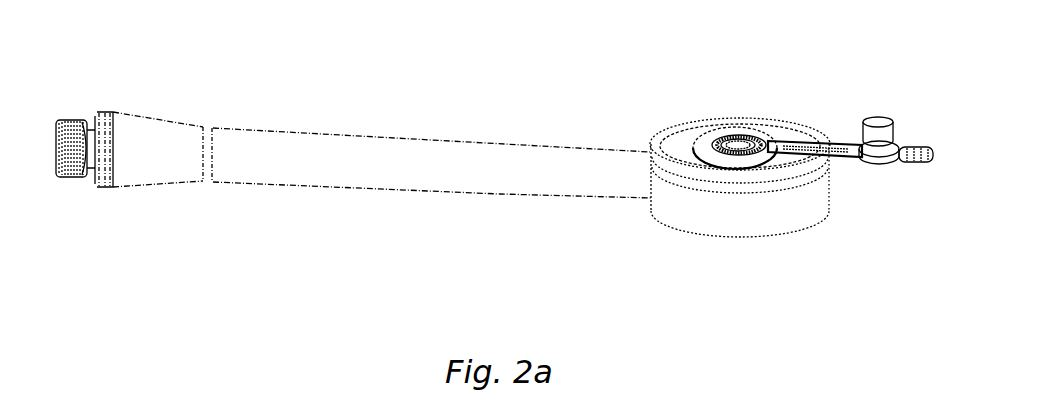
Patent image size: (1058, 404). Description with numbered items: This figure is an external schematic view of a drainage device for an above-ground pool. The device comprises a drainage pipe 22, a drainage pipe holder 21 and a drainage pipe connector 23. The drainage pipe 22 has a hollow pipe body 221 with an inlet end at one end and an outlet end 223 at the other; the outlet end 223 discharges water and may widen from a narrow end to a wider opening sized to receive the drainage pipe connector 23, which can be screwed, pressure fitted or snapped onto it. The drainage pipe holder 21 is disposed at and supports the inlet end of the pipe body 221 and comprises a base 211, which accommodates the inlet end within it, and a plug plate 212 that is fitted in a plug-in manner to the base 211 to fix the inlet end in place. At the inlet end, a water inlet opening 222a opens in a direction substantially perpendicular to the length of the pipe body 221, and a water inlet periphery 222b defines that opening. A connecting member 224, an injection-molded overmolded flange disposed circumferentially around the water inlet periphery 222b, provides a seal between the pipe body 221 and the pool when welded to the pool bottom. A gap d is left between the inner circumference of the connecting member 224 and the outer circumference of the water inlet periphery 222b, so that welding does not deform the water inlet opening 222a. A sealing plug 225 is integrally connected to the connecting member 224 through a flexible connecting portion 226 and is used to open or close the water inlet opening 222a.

The drainage pipe holder 21 is at (746, 220).
The base 211 is at (795, 197).
The plug plate 212 is at (672, 150).
The drainage pipe 22 is at (370, 172).
The pipe body 221 is at (420, 155).
The water inlet opening 222a is at (740, 148).
The water inlet periphery 222b is at (721, 145).
The outlet end 223 is at (131, 173).
The connecting member 224 is at (707, 151).
The sealing plug 225 is at (883, 138).
The flexible connecting portion 226 is at (836, 145).
The drainage pipe connector 23 is at (89, 134).
The gap d is at (758, 146).